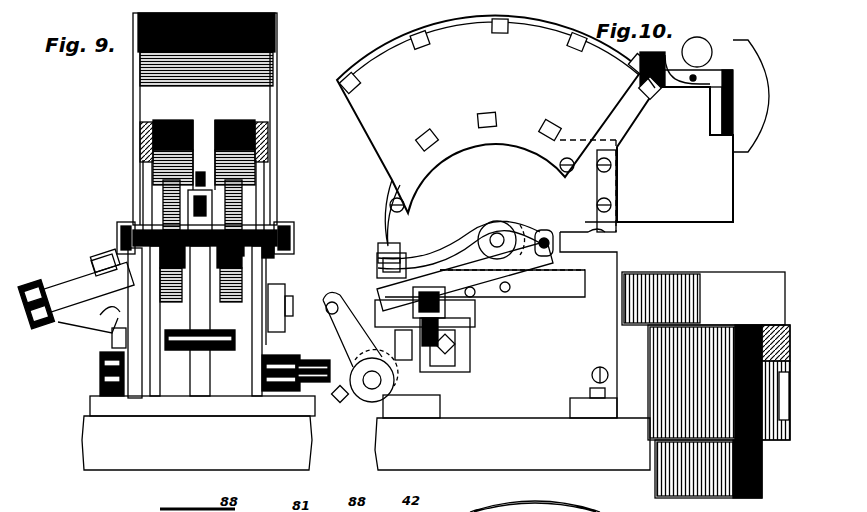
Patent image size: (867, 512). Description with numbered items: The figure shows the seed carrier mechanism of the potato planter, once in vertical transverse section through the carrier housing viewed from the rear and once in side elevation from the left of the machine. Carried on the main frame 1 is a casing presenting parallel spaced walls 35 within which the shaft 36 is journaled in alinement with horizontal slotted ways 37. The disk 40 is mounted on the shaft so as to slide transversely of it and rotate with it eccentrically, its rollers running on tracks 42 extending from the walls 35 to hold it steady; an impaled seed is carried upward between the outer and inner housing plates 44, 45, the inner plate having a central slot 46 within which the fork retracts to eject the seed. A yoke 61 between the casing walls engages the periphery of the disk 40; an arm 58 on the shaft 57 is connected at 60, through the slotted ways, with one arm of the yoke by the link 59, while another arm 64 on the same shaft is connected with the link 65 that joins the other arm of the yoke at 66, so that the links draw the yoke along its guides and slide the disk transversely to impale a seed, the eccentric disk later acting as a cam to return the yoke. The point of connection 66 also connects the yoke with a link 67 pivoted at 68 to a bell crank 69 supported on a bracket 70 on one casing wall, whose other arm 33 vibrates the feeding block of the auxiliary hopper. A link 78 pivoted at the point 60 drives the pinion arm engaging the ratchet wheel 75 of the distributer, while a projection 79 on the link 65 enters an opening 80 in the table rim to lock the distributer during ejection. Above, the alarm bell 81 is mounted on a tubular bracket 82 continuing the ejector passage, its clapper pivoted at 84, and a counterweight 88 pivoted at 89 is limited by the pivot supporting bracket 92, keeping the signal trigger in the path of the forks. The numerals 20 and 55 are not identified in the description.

In FIG. 9, the main frame 1 is at (197, 443).
In FIG. 10, the main frame 1 is at (512, 444).
In FIG. 10, the cylinder lower portion 20 is at (708, 469).
In FIG. 10, the arm of bell crank 33 is at (404, 358).
In FIG. 9, the casing walls 35 is at (145, 180).
In FIG. 10, the casing walls 35 is at (549, 186).
In FIG. 10, the shaft 36 is at (500, 236).
In FIG. 10, the horizontal slotted ways 37 is at (588, 317).
In FIG. 9, the disk 40 is at (214, 205).
In FIG. 9, the tracks 42 is at (244, 254).
In FIG. 9, the outer housing plate 44 is at (276, 30).
In FIG. 10, the outer housing plate 44 is at (464, 28).
In FIG. 9, the inner housing plate 45 is at (174, 125).
In FIG. 10, the inner housing plate 45 is at (392, 196).
In FIG. 9, the central slot 46 is at (200, 135).
In FIG. 9, the pin 55 is at (190, 250).
In FIG. 10, the shaft 57 is at (370, 384).
In FIG. 9, the arm 58 is at (280, 340).
In FIG. 9, the link 59 is at (268, 280).
In FIG. 9, the point of connection 60 is at (292, 236).
In FIG. 9, the yoke 61 is at (158, 308).
In FIG. 10, the arm 64 is at (352, 329).
In FIG. 9, the link 65 is at (110, 308).
In FIG. 10, the link 65 is at (505, 298).
In FIG. 9, the point of connection 66 is at (120, 238).
In FIG. 10, the point of connection 66 is at (545, 232).
In FIG. 9, the link 67 is at (108, 256).
In FIG. 10, the link 67 is at (440, 262).
In FIG. 9, the pivot 68 is at (90, 264).
In FIG. 10, the pivot 68 is at (378, 268).
In FIG. 9, the bell crank 69 is at (80, 298).
In FIG. 10, the bell crank 69 is at (470, 315).
In FIG. 9, the bracket 70 is at (102, 328).
In FIG. 10, the bracket 70 is at (448, 362).
In FIG. 10, the ratchet wheel 75 is at (719, 366).
In FIG. 9, the link 78 is at (280, 250).
In FIG. 10, the projection 79 is at (485, 283).
In FIG. 10, the opening 80 is at (626, 274).
In FIG. 10, the alarm bell 81 is at (755, 58).
In FIG. 10, the tubular bracket 82 is at (675, 146).
In FIG. 10, the pivot 84 is at (692, 80).
In FIG. 10, the counterweight 88 is at (700, 50).
In FIG. 10, the pivot 89 is at (645, 74).
In FIG. 10, the pivot supporting bracket 92 is at (720, 108).